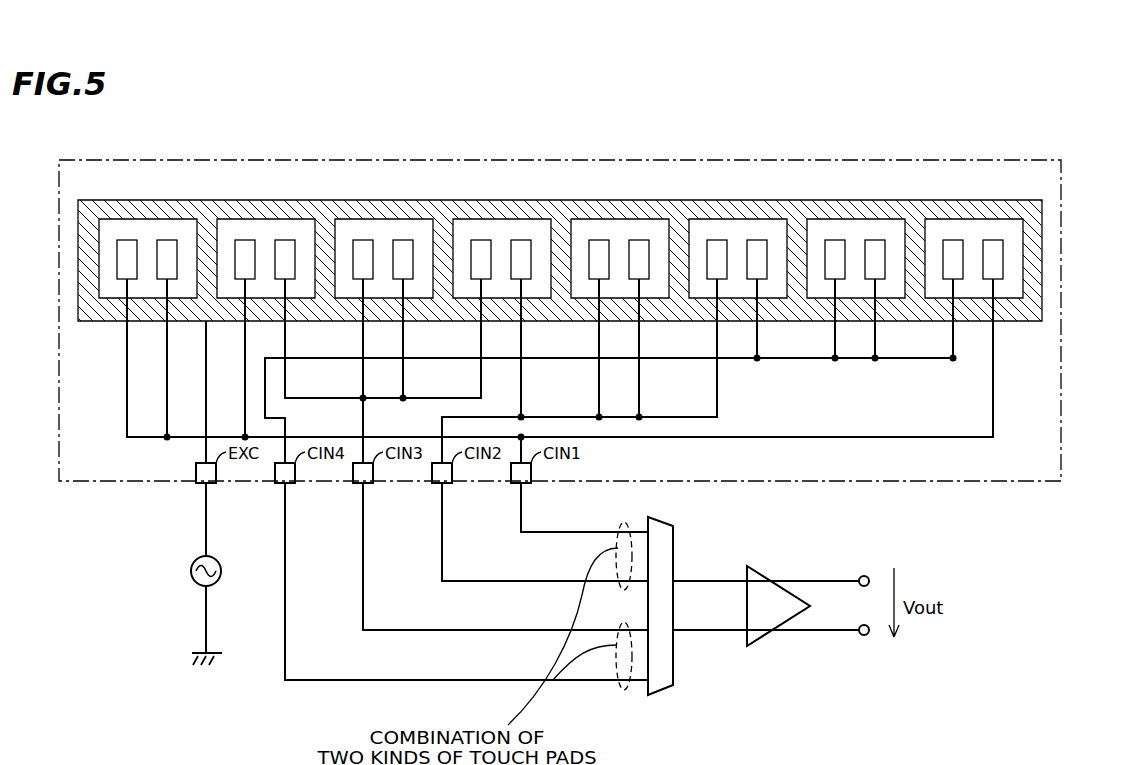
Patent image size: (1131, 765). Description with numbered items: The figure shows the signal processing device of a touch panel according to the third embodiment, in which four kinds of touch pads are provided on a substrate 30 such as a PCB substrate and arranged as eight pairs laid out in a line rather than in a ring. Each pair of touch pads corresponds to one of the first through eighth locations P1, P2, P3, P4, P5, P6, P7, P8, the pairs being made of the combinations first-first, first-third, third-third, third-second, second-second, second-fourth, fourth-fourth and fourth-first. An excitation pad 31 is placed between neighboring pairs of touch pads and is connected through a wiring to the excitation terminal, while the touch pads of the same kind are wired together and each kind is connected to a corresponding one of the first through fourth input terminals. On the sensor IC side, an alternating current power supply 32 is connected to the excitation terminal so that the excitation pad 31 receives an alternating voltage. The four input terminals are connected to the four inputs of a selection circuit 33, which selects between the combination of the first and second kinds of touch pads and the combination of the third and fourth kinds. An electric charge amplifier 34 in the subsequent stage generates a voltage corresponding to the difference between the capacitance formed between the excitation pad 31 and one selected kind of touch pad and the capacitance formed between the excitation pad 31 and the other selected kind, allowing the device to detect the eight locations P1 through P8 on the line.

The substrate 30 is at (1045, 440).
The excitation pad 31 is at (1033, 310).
The alternating current power supply 32 is at (185, 571).
The selection circuit 33 is at (667, 683).
The electric charge amplifier 34 is at (763, 638).
The first location P1 is at (156, 235).
The second location P2 is at (274, 235).
The third location P3 is at (392, 235).
The fourth location P4 is at (510, 235).
The fifth location P5 is at (628, 235).
The sixth location P6 is at (746, 235).
The seventh location P7 is at (864, 235).
The eighth location P8 is at (982, 235).